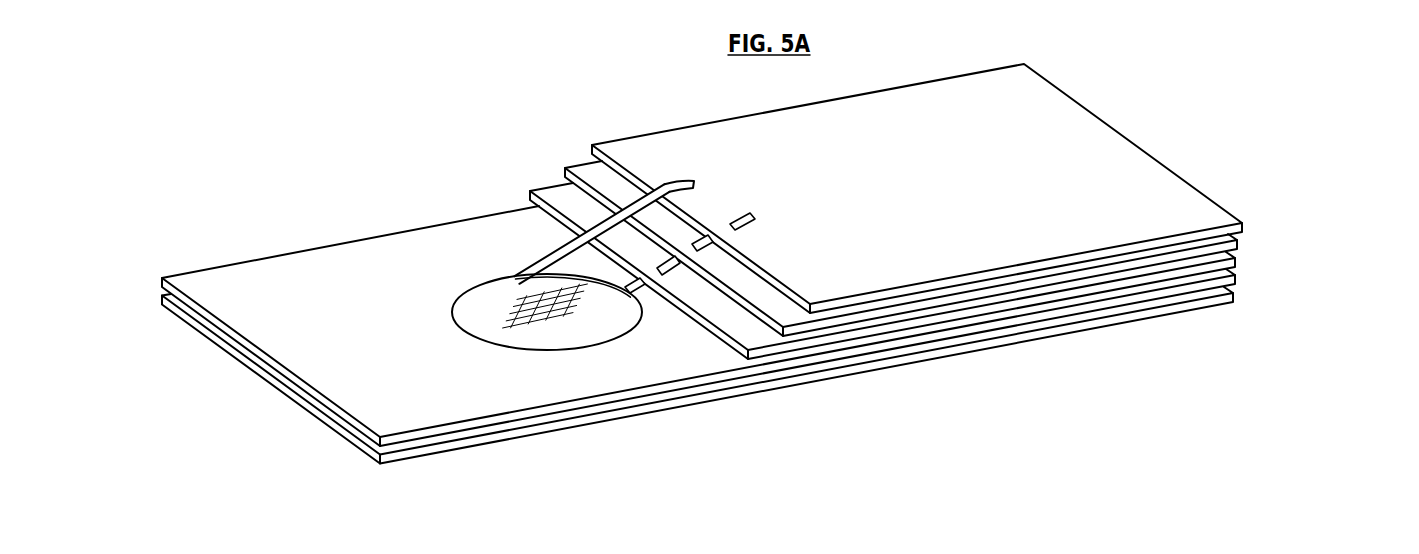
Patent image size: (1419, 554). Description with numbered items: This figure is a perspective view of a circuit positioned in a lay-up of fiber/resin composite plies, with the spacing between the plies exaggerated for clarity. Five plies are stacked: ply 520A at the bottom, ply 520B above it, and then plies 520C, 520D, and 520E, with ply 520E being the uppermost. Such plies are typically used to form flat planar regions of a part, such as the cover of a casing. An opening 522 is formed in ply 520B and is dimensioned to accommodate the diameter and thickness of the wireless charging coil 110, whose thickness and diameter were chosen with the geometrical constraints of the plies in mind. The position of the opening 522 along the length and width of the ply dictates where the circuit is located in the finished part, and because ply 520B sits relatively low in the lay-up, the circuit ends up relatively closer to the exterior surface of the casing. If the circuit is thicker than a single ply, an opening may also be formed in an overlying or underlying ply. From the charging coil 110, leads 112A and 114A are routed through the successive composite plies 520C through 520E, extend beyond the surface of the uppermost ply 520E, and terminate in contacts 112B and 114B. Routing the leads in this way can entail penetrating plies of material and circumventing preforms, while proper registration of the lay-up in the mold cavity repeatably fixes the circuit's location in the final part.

The wireless charging coil 110 is at (767, 264).
The opening 522 is at (470, 270).
The lead 112A is at (534, 186).
The contact 112B is at (677, 178).
The lead 114A is at (670, 266).
The contact 114B is at (750, 213).
The ply 520A is at (1207, 308).
The ply 520B is at (1238, 283).
The ply 520C is at (1238, 264).
The ply 520D is at (1238, 243).
The ply 520E is at (1242, 223).